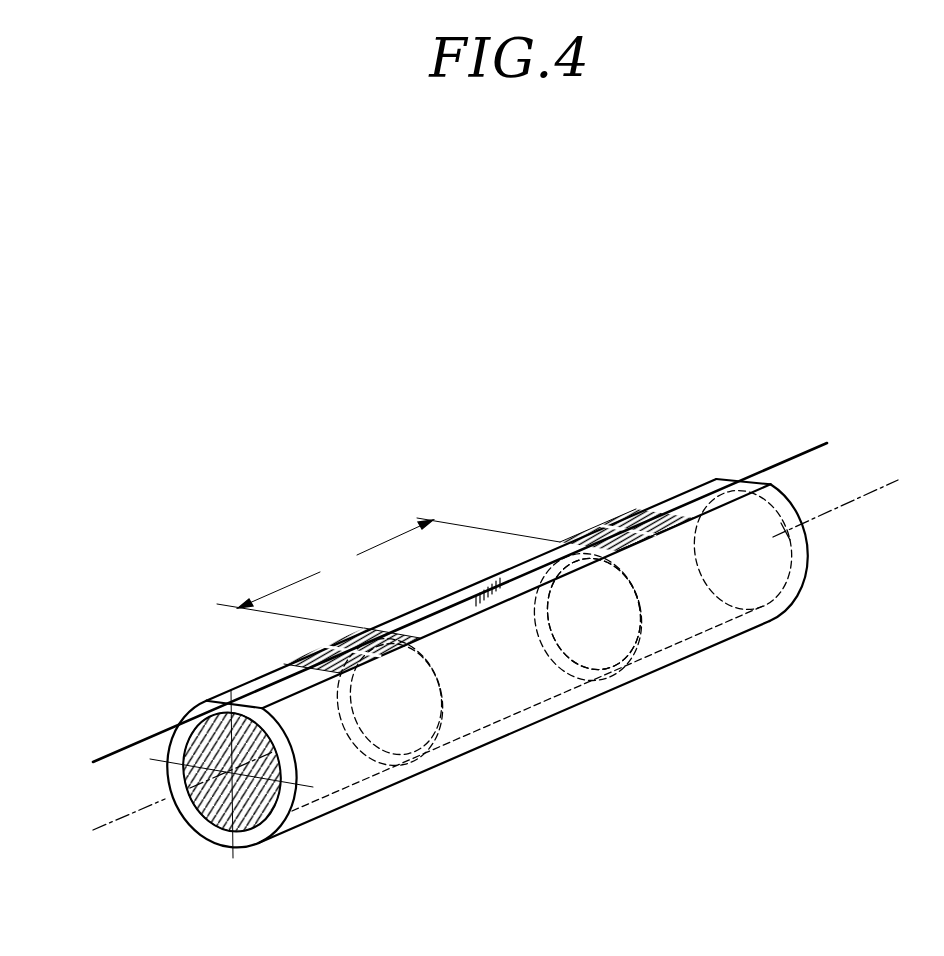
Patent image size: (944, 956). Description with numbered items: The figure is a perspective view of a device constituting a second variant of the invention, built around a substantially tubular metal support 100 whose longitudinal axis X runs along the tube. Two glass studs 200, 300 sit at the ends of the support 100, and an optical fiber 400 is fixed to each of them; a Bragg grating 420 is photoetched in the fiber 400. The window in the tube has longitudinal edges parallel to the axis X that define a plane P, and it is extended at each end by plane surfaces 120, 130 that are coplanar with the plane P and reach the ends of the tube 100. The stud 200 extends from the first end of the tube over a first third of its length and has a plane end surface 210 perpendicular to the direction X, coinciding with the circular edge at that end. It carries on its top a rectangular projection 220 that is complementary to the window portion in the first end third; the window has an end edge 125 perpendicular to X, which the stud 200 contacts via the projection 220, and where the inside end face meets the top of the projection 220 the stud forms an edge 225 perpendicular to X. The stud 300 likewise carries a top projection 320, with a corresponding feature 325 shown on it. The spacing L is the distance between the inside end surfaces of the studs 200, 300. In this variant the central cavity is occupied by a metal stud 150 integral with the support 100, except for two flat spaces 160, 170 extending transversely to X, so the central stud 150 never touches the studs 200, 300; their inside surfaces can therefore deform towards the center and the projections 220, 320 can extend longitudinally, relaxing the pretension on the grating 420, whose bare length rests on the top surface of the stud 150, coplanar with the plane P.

The tubular metal support 100 is at (677, 660).
The plane surface 120 is at (243, 681).
The end edge 125 is at (330, 675).
The plane surface 130 is at (720, 483).
The central metal stud 150 is at (515, 570).
The flat space 160 is at (370, 627).
The flat space 170 is at (563, 543).
The glass stud 200 is at (205, 769).
The plane end surface 210 is at (226, 822).
The projection 220 is at (317, 649).
The edge 225 is at (420, 638).
The glass stud 300 is at (620, 515).
The projection 320 is at (580, 532).
The second marking band segment 325 is at (630, 545).
The optical fiber 400 is at (118, 751).
The Bragg grating 420 is at (470, 582).
The plane P is at (677, 500).
The spacing L is at (388, 573).
The axis X is at (509, 641).